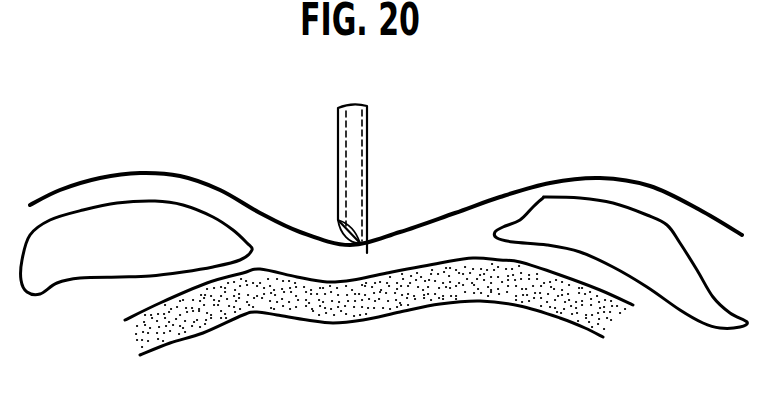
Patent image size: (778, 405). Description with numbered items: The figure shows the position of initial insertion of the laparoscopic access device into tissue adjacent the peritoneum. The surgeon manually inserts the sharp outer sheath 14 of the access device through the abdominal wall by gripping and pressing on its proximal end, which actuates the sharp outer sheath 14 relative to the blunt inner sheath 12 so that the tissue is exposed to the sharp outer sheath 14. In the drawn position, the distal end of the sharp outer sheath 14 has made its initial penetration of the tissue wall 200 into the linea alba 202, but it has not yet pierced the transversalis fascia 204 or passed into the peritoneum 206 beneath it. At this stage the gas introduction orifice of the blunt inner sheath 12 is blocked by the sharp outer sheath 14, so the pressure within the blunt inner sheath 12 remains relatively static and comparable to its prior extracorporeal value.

The blunt inner sheath 12 is at (338, 136).
The sharp outer sheath 14 is at (343, 232).
The tissue wall 200 is at (454, 207).
The linea alba 202 is at (347, 270).
The transversalis fascia 204 is at (310, 313).
The peritoneum 206 is at (243, 318).